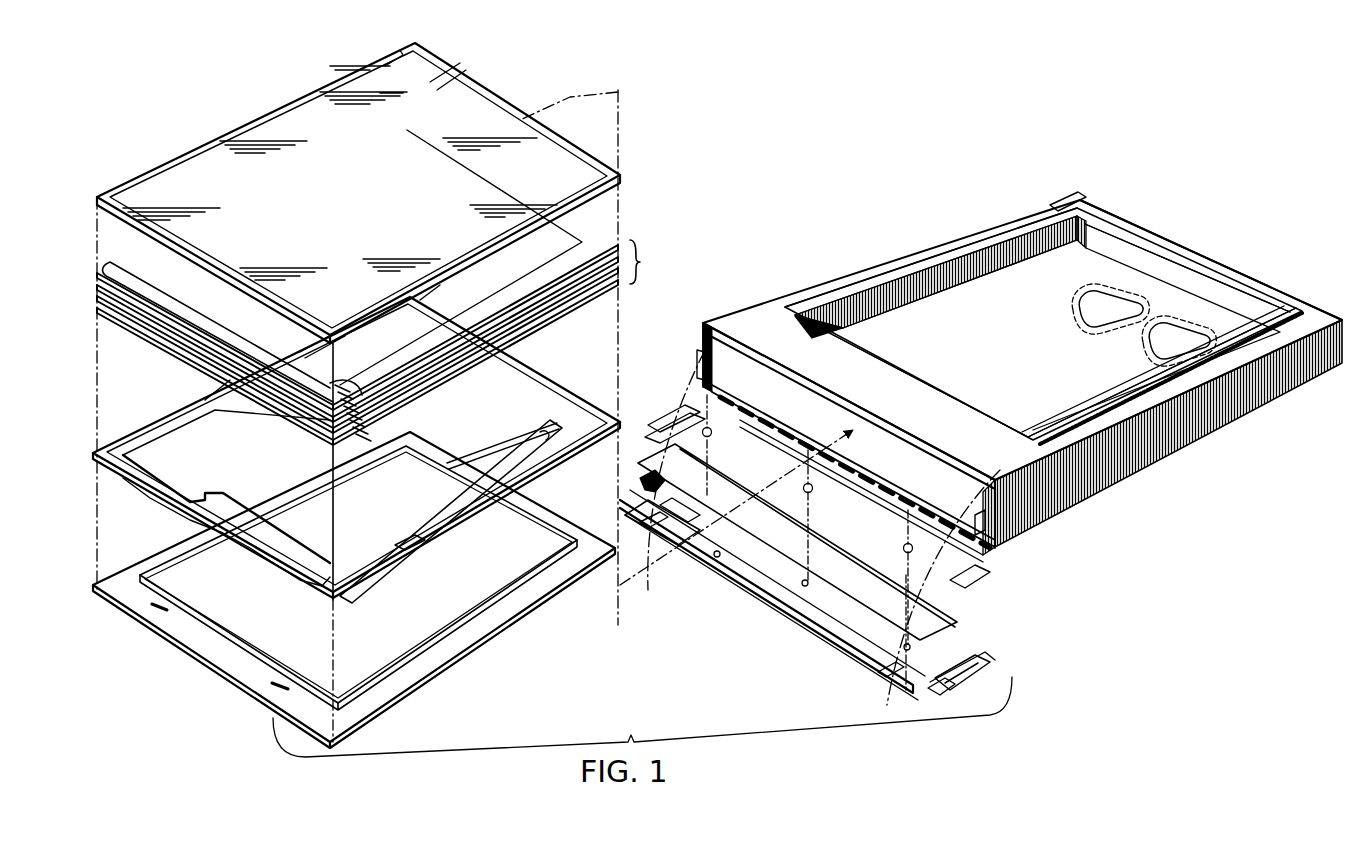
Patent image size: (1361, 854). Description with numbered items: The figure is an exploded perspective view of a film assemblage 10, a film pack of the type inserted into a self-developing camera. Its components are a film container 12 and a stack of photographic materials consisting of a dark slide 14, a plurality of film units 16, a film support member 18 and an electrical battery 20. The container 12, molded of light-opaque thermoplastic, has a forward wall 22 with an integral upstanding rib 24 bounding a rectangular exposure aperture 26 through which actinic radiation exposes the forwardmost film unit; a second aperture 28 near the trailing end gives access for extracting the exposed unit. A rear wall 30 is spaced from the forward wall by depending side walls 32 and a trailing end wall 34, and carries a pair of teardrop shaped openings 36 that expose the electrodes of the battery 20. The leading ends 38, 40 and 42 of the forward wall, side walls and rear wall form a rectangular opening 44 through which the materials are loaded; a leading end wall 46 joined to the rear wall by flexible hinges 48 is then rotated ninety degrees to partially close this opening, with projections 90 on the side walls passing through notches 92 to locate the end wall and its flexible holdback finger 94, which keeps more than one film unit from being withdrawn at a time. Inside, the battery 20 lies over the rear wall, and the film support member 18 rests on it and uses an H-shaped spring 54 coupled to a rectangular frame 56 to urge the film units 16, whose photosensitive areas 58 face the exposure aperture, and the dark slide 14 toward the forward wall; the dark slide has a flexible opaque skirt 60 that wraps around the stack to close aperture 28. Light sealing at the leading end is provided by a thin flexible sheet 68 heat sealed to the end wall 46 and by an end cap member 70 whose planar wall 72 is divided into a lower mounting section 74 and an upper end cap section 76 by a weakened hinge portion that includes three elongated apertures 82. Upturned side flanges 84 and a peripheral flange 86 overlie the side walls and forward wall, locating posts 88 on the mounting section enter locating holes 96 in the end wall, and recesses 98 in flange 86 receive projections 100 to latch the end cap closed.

The film assemblage 10 is at (768, 140).
The film container 12 is at (801, 275).
The dark slide 14 is at (570, 178).
The film units 16 is at (642, 258).
The film support member 18 is at (592, 416).
The electrical battery 20 is at (592, 534).
The forward wall 22 is at (766, 312).
The upstanding rib 24 is at (885, 276).
The exposure aperture 26 is at (976, 262).
The second aperture 28 is at (1052, 200).
The rear wall 30 is at (1050, 368).
The side walls 32 is at (920, 292).
The trailing end wall 34 is at (1240, 302).
The teardrop shaped openings 36 is at (1106, 306).
The leading end of forward wall 38 is at (892, 388).
The leading ends of side walls 40 is at (1012, 522).
The leading end of rear wall 42 is at (798, 412).
The rectangular opening 44 is at (930, 466).
The leading end wall 46 is at (985, 575).
The flexible hinges 48 is at (735, 407).
The H-shaped spring 54 is at (418, 452).
The rectangular frame 56 is at (405, 548).
The photosensitive areas 58 is at (404, 337).
The flexible opaque skirt 60 is at (466, 62).
The flexible sheet 68 is at (942, 624).
The end cap member 70 is at (968, 684).
The planar wall 72 is at (968, 656).
The end cap mounting section 74 is at (872, 634).
The end cap section 76 is at (714, 558).
The elongated apertures 82 is at (762, 572).
The upturned side flanges 84 is at (648, 492).
The upturned flange 86 is at (845, 632).
The locating posts 88 is at (694, 522).
The projections 90 is at (698, 358).
The notches 92 is at (685, 408).
The flexible holdback finger 94 is at (650, 428).
The locating holes 96 is at (713, 434).
The recesses 98 is at (645, 534).
The projections 100 is at (738, 330).